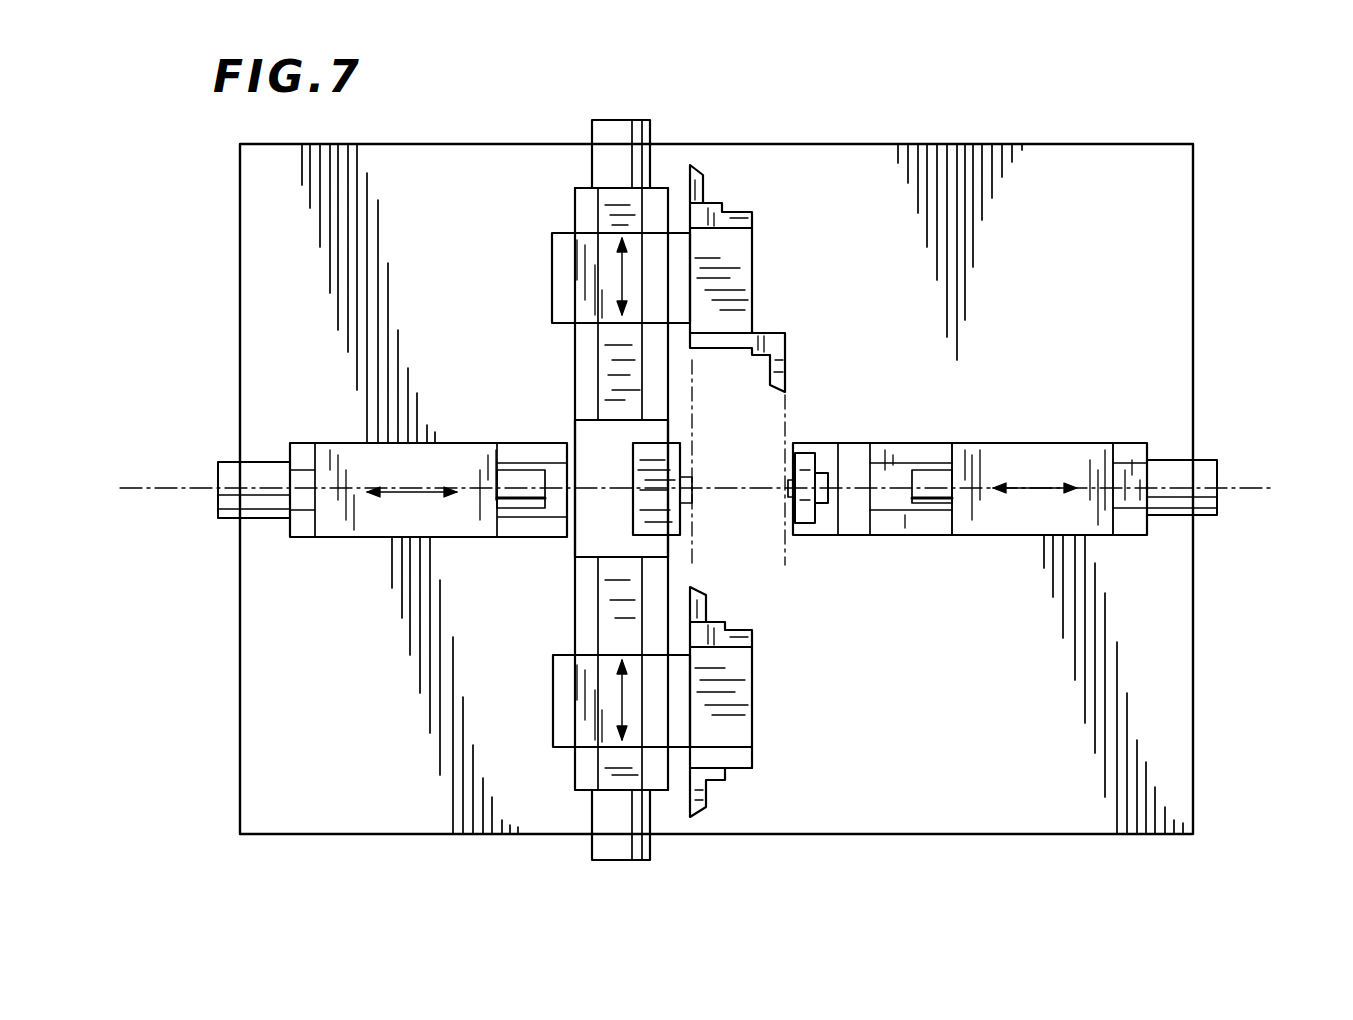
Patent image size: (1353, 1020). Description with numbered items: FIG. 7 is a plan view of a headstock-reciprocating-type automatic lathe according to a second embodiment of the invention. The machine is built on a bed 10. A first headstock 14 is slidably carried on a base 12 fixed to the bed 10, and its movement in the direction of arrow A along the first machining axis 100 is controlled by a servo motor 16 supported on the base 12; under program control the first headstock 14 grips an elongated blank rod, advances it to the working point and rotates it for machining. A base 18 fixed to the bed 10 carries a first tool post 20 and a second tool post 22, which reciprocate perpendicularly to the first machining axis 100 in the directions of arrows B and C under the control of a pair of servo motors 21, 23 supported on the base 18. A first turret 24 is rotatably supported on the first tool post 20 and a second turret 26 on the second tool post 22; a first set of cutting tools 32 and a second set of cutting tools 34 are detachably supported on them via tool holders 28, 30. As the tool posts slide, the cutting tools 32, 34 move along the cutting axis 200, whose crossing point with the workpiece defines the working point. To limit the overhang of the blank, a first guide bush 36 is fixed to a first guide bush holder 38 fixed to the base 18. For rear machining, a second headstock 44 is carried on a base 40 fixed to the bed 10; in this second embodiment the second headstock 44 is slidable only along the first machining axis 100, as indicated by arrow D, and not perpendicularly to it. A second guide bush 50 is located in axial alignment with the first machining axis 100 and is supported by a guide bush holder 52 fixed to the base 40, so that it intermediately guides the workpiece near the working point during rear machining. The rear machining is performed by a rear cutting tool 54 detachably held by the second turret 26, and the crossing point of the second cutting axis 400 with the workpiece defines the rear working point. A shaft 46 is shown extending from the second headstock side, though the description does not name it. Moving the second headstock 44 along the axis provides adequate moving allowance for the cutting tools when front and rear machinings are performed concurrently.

The bed 10 is at (1175, 778).
The first machining axis 100 is at (162, 502).
The base 12 is at (522, 525).
The first headstock 14 is at (330, 525).
The servo motor 16 is at (238, 505).
The base 18 is at (590, 430).
The first tool post 20 is at (554, 703).
The servo motor 21 is at (625, 850).
The second tool post 22 is at (556, 272).
The servo motor 23 is at (635, 128).
The first turret 24 is at (740, 724).
The second turret 26 is at (752, 272).
The tool holder 28 is at (752, 637).
The tool holder 30 is at (752, 218).
The first set of cutting tools 32 is at (706, 612).
The second set of cutting tools 34 is at (705, 190).
The first guide bush 36 is at (692, 478).
The first guide bush holder 38 is at (670, 525).
The base 40 is at (856, 520).
The second headstock 44 is at (1035, 442).
The second drive shaft 46 is at (1201, 455).
The second guide bush 50 is at (822, 475).
The guide bush holder 52 is at (806, 520).
The rear cutting tool 54 is at (776, 373).
The cutting axis 200 is at (692, 375).
The second cutting axis 400 is at (788, 414).